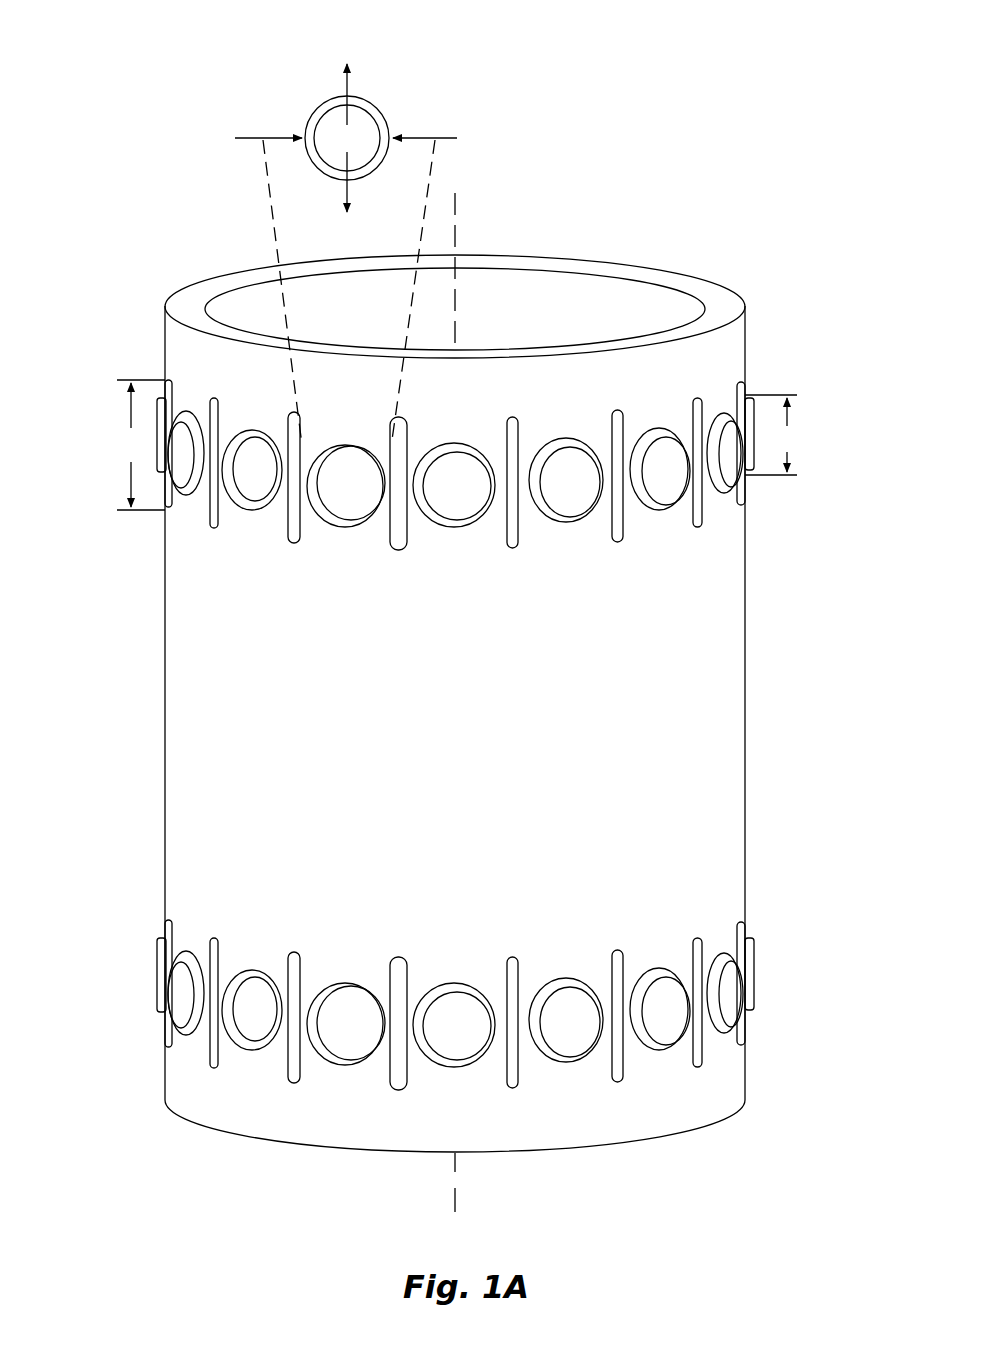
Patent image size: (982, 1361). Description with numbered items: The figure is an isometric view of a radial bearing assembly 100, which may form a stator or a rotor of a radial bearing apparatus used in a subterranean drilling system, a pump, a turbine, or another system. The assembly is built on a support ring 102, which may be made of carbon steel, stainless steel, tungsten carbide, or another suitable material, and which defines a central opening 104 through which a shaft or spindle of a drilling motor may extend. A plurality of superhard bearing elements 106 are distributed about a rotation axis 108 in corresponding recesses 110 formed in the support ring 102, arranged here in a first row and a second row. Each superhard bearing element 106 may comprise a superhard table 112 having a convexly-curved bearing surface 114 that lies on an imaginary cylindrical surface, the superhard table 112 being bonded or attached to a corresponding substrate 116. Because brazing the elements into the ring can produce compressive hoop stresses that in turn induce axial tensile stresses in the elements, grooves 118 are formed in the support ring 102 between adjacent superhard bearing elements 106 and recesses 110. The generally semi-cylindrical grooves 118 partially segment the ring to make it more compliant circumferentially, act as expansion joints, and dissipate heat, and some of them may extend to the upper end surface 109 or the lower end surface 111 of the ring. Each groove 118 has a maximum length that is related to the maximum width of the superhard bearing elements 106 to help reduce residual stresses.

The radial bearing assembly 100 is at (119, 252).
The support ring 102 is at (718, 719).
The opening 104 is at (490, 327).
The superhard bearing elements 106 is at (500, 613).
The rotation axis 108 is at (457, 237).
The upper end surface 109 is at (710, 289).
The recesses 110 is at (350, 503).
The lower end surface 111 is at (708, 1128).
The superhard table 112 is at (370, 137).
The bearing surface 114 is at (325, 1097).
The substrate 116 is at (383, 128).
The grooves 118 is at (293, 544).